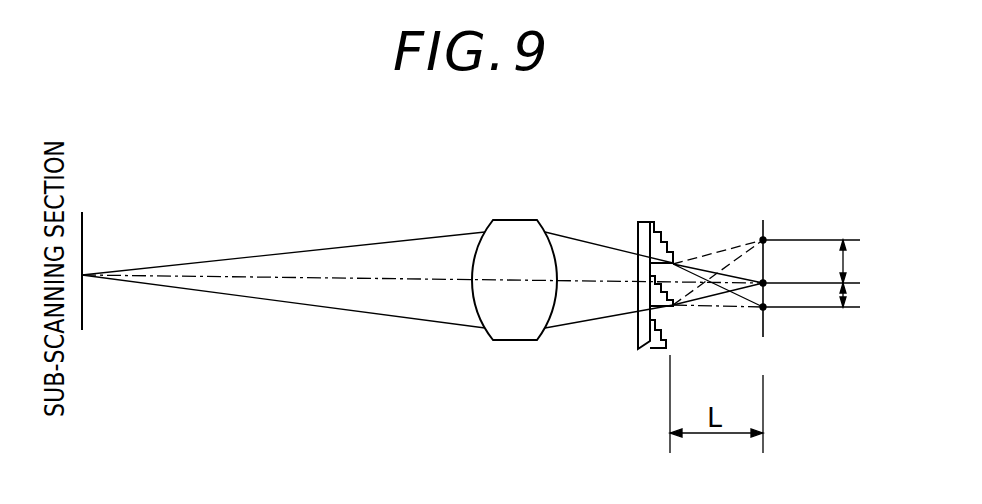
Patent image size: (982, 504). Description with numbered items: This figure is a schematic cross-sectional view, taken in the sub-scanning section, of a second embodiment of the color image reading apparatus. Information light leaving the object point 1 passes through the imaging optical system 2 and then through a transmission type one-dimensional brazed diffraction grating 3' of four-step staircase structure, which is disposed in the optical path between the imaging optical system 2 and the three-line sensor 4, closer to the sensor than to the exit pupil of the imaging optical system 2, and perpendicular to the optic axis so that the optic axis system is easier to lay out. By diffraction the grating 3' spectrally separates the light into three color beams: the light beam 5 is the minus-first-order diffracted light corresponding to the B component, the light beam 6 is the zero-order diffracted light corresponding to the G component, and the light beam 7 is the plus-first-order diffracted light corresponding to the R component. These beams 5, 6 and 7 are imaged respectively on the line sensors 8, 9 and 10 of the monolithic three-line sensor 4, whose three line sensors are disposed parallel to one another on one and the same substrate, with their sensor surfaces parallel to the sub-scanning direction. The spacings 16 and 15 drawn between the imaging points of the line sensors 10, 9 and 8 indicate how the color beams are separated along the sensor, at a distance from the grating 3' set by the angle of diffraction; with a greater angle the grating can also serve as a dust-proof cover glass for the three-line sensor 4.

The light source 1 is at (82, 227).
The imaging optical system 2 is at (508, 240).
The transmission type one-dimensional brazed diffraction grating 3' is at (653, 252).
The three-line sensor 4 is at (763, 240).
The light beam 5 is at (706, 300).
The light beam 6 is at (737, 300).
The light beam 7 is at (717, 252).
The line sensor 8 is at (765, 309).
The line sensor 9 is at (765, 282).
The line sensor 10 is at (765, 238).
The image point spacing 15 is at (862, 298).
The image point spacing 16 is at (861, 261).